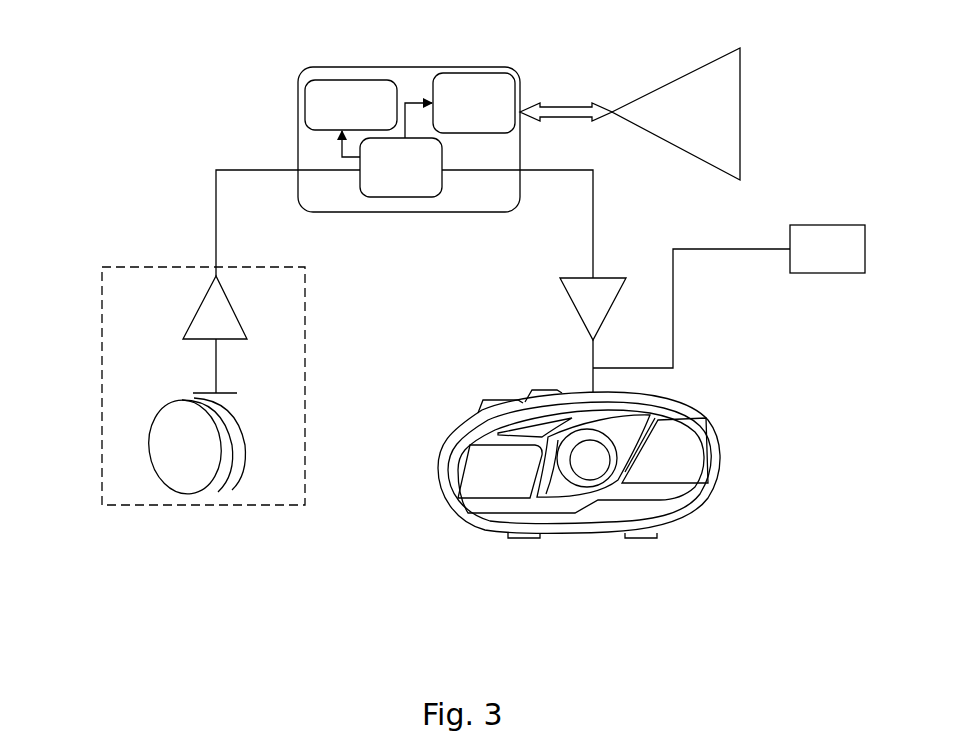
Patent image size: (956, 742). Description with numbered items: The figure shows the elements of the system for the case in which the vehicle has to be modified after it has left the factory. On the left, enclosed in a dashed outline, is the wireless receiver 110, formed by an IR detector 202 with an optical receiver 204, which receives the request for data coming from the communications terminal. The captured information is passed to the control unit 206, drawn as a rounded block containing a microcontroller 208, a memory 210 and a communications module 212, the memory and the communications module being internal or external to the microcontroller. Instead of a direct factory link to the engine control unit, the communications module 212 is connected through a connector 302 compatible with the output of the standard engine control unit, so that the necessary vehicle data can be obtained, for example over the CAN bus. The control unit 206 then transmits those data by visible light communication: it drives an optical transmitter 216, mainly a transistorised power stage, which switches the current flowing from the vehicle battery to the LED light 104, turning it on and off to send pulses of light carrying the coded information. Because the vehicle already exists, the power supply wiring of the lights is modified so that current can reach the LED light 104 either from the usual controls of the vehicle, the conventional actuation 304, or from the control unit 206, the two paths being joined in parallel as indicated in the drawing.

The LED light 104 is at (705, 507).
The wireless receiver 110 is at (101, 416).
The IR detector 202 is at (190, 480).
The optical receiver 204 is at (217, 298).
The control unit 206 is at (420, 212).
The microcontroller 208 is at (401, 167).
The memory 210 is at (351, 118).
The communications module 212 is at (460, 105).
The optical transmitter 216 is at (582, 303).
The connector 302 is at (725, 148).
The conventional actuation 304 is at (827, 249).